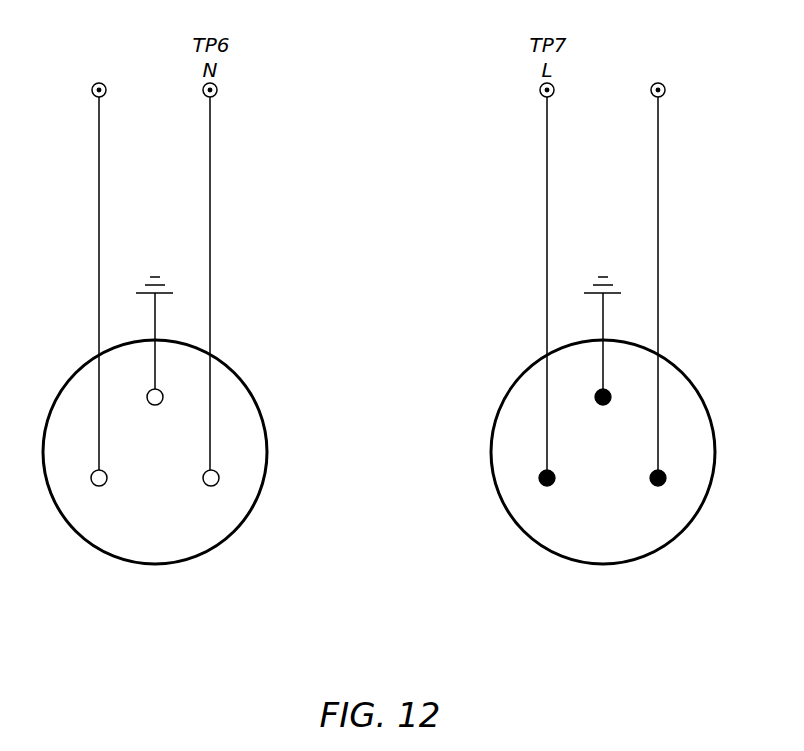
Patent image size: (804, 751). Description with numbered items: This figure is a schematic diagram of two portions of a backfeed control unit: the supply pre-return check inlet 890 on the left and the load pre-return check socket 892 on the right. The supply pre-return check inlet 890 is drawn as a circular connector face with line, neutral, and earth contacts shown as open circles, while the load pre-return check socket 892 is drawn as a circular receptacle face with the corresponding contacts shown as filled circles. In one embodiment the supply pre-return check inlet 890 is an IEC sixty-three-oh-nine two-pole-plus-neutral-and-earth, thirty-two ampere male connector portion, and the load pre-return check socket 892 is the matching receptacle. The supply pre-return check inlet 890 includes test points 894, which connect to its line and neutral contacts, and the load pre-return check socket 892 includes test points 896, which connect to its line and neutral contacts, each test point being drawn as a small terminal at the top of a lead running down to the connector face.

The supply pre-return check inlet 890 is at (267, 452).
The load pre-return check socket 892 is at (715, 452).
The test points 894 is at (92, 90).
The test points 896 is at (665, 90).